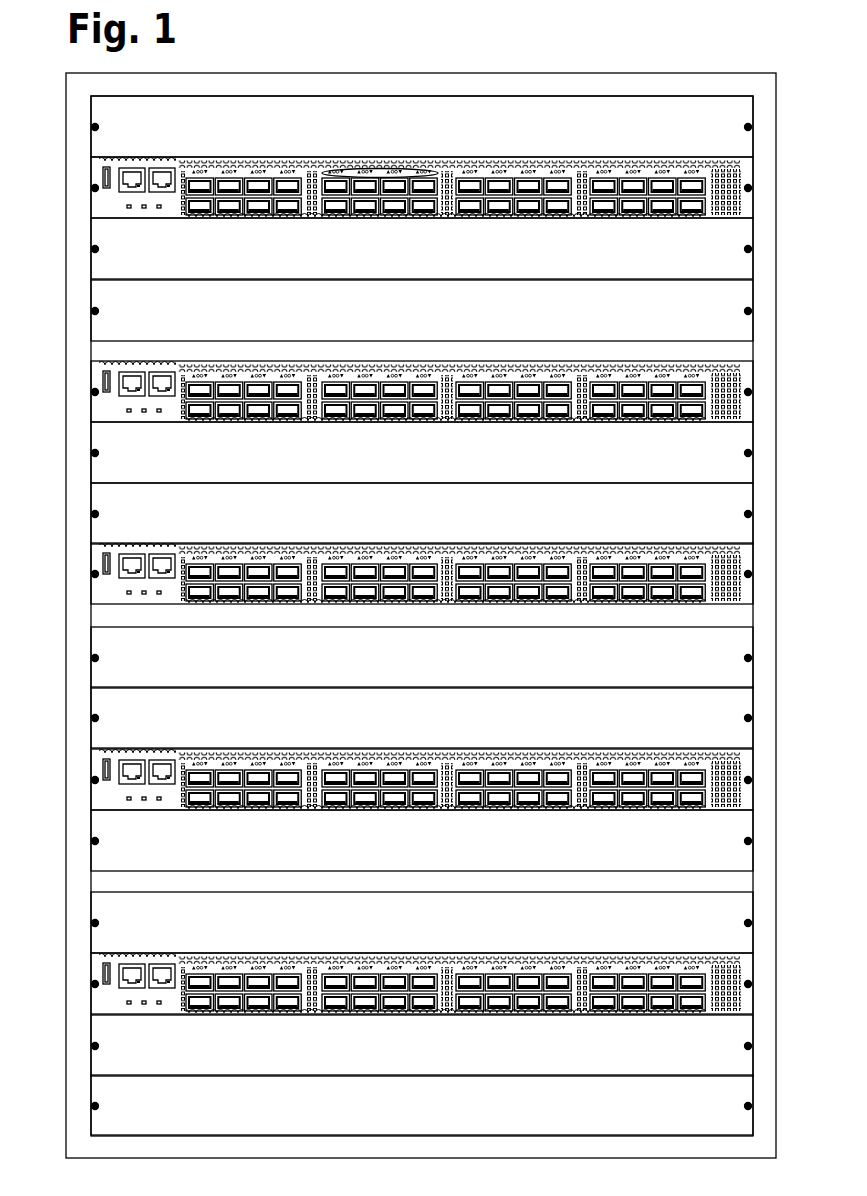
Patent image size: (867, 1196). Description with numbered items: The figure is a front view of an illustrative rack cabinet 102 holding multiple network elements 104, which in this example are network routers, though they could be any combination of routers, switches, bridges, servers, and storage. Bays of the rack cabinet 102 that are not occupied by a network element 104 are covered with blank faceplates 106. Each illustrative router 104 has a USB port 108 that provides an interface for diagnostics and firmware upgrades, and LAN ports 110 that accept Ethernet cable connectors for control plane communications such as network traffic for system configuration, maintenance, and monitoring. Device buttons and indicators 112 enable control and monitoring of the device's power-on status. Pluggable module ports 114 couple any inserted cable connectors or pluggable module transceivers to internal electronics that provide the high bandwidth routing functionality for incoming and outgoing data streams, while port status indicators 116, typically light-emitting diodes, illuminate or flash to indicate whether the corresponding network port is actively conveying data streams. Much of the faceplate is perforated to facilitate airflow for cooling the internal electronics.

The rack cabinet 102 is at (513, 73).
The network elements 104 is at (466, 558).
The blank faceplates 106 is at (91, 1083).
The USB port 108 is at (106, 166).
The LAN ports 110 is at (117, 160).
The device buttons and indicators 112 is at (160, 216).
The pluggable module ports 114 is at (706, 218).
The port status indicators 116 is at (399, 166).